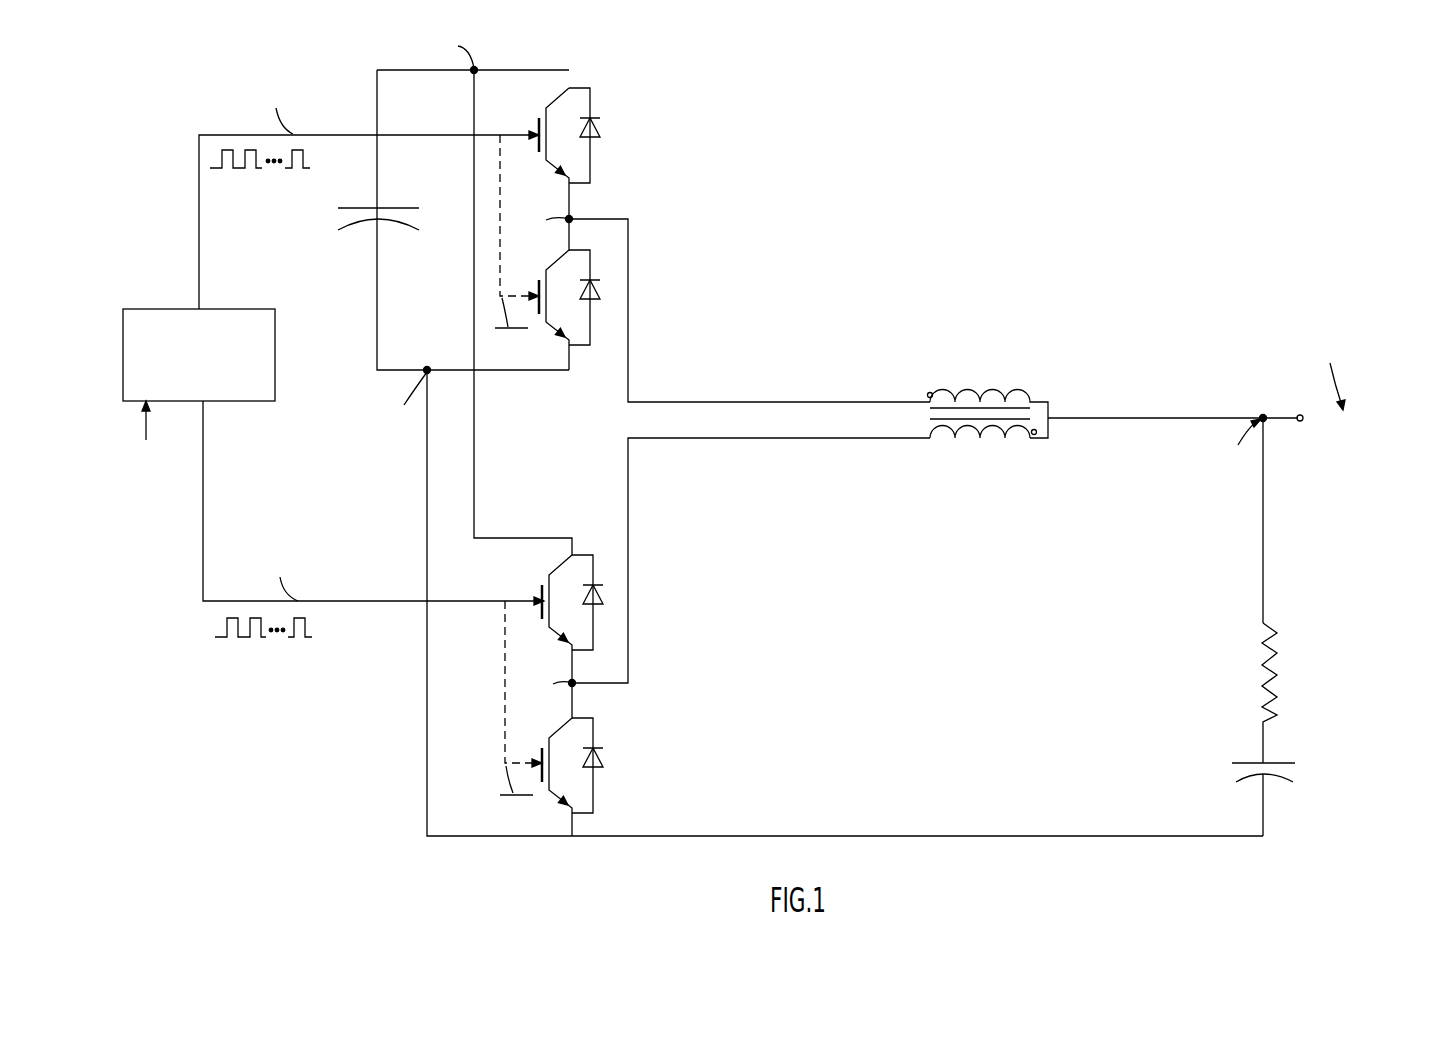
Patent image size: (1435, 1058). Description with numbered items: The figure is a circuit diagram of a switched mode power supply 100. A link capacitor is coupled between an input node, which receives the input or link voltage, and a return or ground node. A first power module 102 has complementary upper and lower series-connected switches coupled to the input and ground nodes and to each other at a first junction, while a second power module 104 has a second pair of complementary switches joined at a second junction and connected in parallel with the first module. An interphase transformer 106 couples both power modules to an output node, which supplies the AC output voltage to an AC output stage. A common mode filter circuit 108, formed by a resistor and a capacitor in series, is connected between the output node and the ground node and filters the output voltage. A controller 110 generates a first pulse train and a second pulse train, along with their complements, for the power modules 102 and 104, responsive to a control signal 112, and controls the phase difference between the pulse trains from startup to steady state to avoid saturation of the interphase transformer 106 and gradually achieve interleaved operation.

The switched mode power supply 100 is at (978, 177).
The first power module 102 is at (684, 181).
The second power module 104 is at (668, 696).
The interphase transformer 106 is at (918, 414).
The common mode filter circuit 108 is at (1212, 623).
The controller 110 is at (160, 308).
The control signal 112 is at (149, 450).